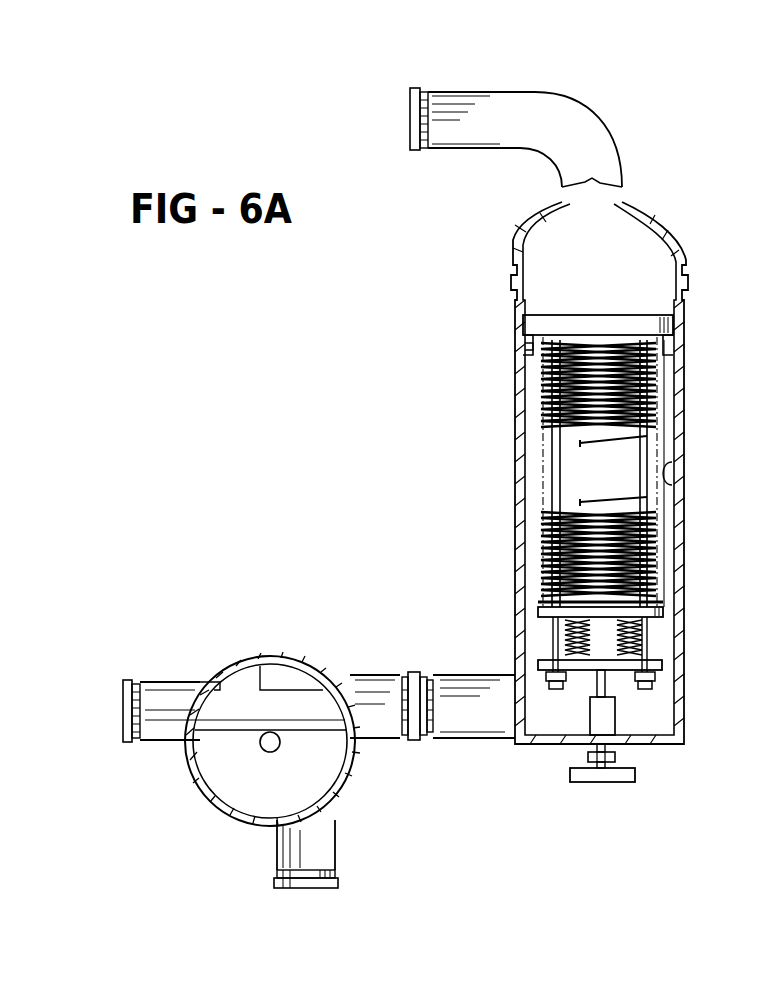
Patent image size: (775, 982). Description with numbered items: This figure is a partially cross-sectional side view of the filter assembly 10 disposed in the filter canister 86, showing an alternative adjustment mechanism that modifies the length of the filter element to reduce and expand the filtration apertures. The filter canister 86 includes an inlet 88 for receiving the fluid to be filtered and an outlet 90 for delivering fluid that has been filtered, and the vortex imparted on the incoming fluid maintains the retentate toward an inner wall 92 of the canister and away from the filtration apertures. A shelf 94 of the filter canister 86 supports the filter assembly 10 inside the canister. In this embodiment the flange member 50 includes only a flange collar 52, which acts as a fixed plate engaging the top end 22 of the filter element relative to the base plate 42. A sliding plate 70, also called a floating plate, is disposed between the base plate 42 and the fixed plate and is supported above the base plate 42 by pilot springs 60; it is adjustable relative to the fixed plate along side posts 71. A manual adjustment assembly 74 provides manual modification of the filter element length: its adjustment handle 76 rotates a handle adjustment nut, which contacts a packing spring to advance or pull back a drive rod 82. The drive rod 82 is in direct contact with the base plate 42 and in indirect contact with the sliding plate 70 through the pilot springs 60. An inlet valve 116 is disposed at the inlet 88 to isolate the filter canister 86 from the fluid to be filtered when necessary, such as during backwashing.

The filter assembly 10 is at (672, 185).
The top end of the filter element 22 is at (660, 346).
The base plate 42 is at (655, 657).
The flange member 50 is at (542, 294).
The flange collar 52 is at (610, 322).
The pilot springs 60 is at (556, 632).
The sliding plate 70 is at (660, 610).
The side posts 71 is at (650, 442).
The manual adjustment assembly 74 is at (610, 793).
The adjustment handle 76 is at (635, 775).
The drive rod 82 is at (640, 700).
The filter canister 86 is at (698, 397).
The inlet 88 is at (527, 703).
The outlet 90 is at (411, 126).
The inner wall 92 is at (672, 478).
The shelf 94 is at (522, 345).
The inlet valve 116 is at (218, 812).